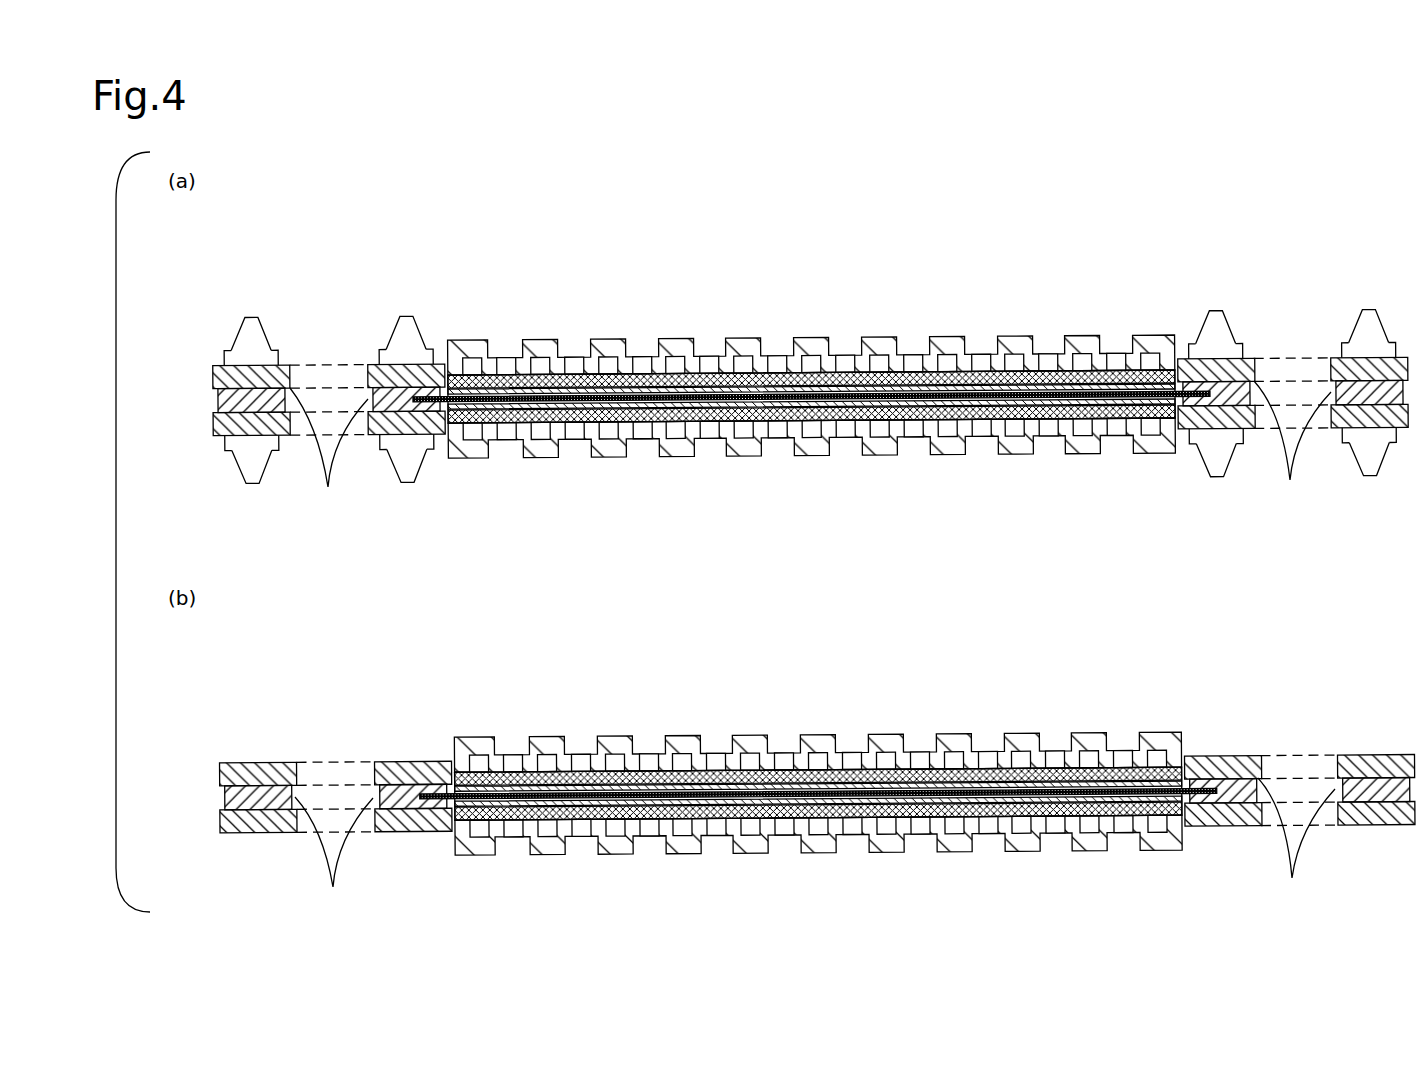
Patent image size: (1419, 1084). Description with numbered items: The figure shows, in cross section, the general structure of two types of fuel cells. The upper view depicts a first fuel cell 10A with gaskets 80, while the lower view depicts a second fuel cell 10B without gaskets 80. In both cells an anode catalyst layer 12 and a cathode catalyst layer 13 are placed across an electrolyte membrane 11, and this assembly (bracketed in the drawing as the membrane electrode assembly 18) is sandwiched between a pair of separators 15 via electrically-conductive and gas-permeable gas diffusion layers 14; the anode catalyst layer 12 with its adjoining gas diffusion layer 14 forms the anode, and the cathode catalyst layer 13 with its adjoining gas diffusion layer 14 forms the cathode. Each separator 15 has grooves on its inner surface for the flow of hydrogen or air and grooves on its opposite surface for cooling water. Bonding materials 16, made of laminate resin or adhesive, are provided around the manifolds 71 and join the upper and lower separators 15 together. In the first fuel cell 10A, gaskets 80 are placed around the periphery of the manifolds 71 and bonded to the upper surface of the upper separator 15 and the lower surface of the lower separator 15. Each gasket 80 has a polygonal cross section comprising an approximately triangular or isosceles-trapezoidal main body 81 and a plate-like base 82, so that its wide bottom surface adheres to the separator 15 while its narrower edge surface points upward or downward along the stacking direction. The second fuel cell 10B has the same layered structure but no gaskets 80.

The first fuel cell 10A is at (1191, 205).
The second fuel cell 10B is at (1191, 631).
The electrolyte membrane 11 is at (982, 392).
The anode catalyst layer 12 is at (916, 378).
The cathode catalyst layer 13 is at (1033, 410).
The gas diffusion layer 14 is at (878, 358).
The separator 15 is at (810, 338).
The bonding material 16 is at (812, 649).
The membrane electrode assembly 18 is at (932, 272).
The manifold 71 is at (338, 344).
The gasket 80 is at (251, 318).
The main body 81 is at (248, 336).
The base 82 is at (243, 358).